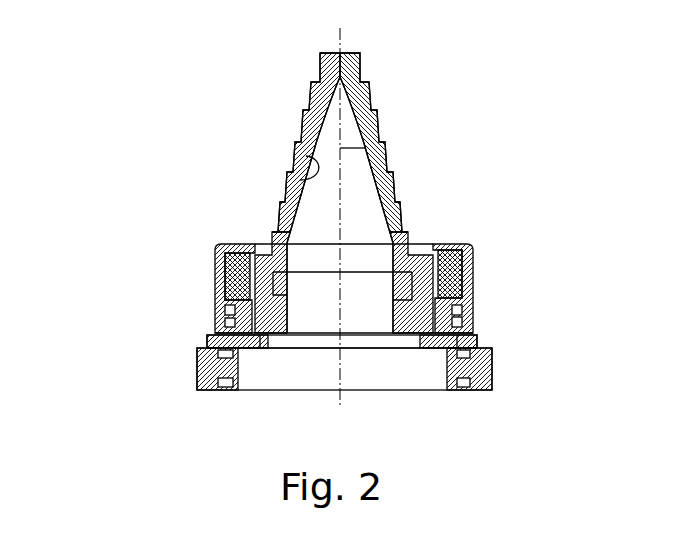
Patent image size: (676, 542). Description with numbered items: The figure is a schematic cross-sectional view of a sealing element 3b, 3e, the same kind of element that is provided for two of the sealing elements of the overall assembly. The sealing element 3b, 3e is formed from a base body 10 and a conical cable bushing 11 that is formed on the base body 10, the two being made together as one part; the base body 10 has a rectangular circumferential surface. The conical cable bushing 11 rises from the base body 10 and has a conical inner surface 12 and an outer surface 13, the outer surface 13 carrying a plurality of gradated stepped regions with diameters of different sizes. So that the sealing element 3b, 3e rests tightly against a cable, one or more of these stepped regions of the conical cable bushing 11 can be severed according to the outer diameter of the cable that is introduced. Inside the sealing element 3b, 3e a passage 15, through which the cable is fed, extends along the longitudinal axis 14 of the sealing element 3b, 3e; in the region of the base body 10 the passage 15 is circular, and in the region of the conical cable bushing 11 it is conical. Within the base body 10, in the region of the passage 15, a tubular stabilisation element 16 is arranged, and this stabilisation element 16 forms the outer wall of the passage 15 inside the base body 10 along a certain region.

The sealing element 3b is at (152, 140).
The sealing element 3e is at (208, 183).
The base body 10 is at (413, 288).
The conical cable bushing 11 is at (392, 178).
The conical inner surface 12 is at (293, 173).
The outer surface 13 is at (313, 102).
The longitudinal axis 14 is at (383, 142).
The passage 15 is at (365, 213).
The tubular stabilisation element 16 is at (390, 284).